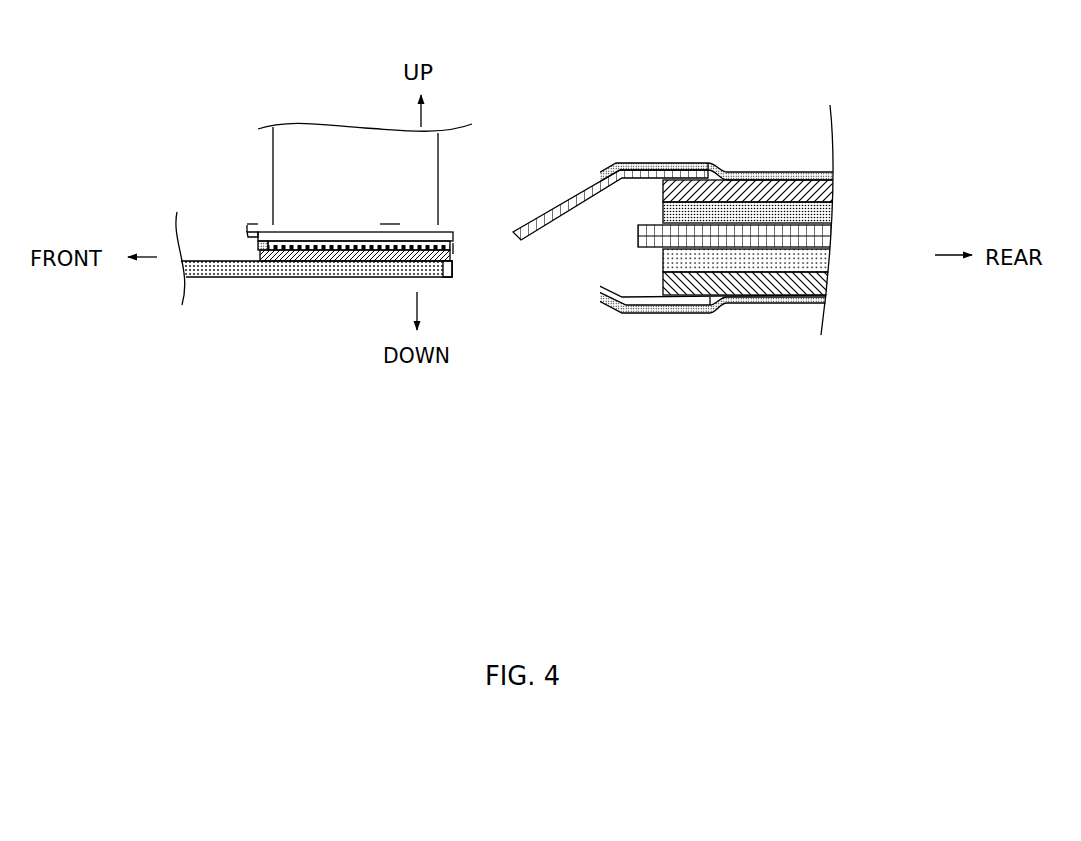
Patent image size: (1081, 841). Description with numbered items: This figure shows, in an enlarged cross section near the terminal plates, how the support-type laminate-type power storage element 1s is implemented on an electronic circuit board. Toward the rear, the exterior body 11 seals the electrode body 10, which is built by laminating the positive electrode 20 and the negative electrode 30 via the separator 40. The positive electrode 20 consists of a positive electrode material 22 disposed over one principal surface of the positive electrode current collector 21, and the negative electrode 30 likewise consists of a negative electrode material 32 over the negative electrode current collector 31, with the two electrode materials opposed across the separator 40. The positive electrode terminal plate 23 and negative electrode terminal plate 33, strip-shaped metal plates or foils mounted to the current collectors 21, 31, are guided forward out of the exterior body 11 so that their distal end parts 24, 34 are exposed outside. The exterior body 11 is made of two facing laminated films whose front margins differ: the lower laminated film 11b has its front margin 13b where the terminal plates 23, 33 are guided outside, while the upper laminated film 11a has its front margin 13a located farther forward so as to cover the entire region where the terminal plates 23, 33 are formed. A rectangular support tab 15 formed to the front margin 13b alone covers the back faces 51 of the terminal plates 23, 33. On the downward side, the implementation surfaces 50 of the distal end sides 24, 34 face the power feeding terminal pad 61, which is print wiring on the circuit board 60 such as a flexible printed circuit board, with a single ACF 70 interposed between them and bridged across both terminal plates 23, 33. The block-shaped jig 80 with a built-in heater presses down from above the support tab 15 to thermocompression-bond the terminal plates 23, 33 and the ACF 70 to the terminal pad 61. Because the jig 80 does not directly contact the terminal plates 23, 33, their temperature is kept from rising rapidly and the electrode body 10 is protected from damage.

The support-type laminate-type power storage element 1s is at (523, 127).
The electrode body 10 is at (790, 237).
The exterior body 11 is at (543, 234).
The upper laminated film 11a is at (543, 228).
The lower laminated film 11b is at (754, 304).
The front margin 13a is at (241, 221).
The front margin 13b is at (443, 270).
The support tab 15 is at (255, 222).
The positive electrode 20 is at (785, 201).
The positive electrode current collector 21 is at (812, 197).
The positive electrode material 22 is at (812, 210).
The positive electrode terminal plate 23 is at (660, 162).
The distal end part 24 is at (258, 242).
The negative electrode 30 is at (783, 273).
The negative electrode current collector 31 is at (808, 281).
The negative electrode material 32 is at (808, 257).
The negative electrode terminal plate 33 is at (665, 313).
The distal end part 34 is at (359, 245).
The separator 40 is at (808, 238).
The implementation surfaces 50 is at (273, 278).
The back face 51 is at (393, 218).
The circuit board 60 is at (453, 277).
The power feeding terminal pad 61 is at (350, 260).
The ACF 70 is at (262, 245).
The jig 80 is at (326, 138).